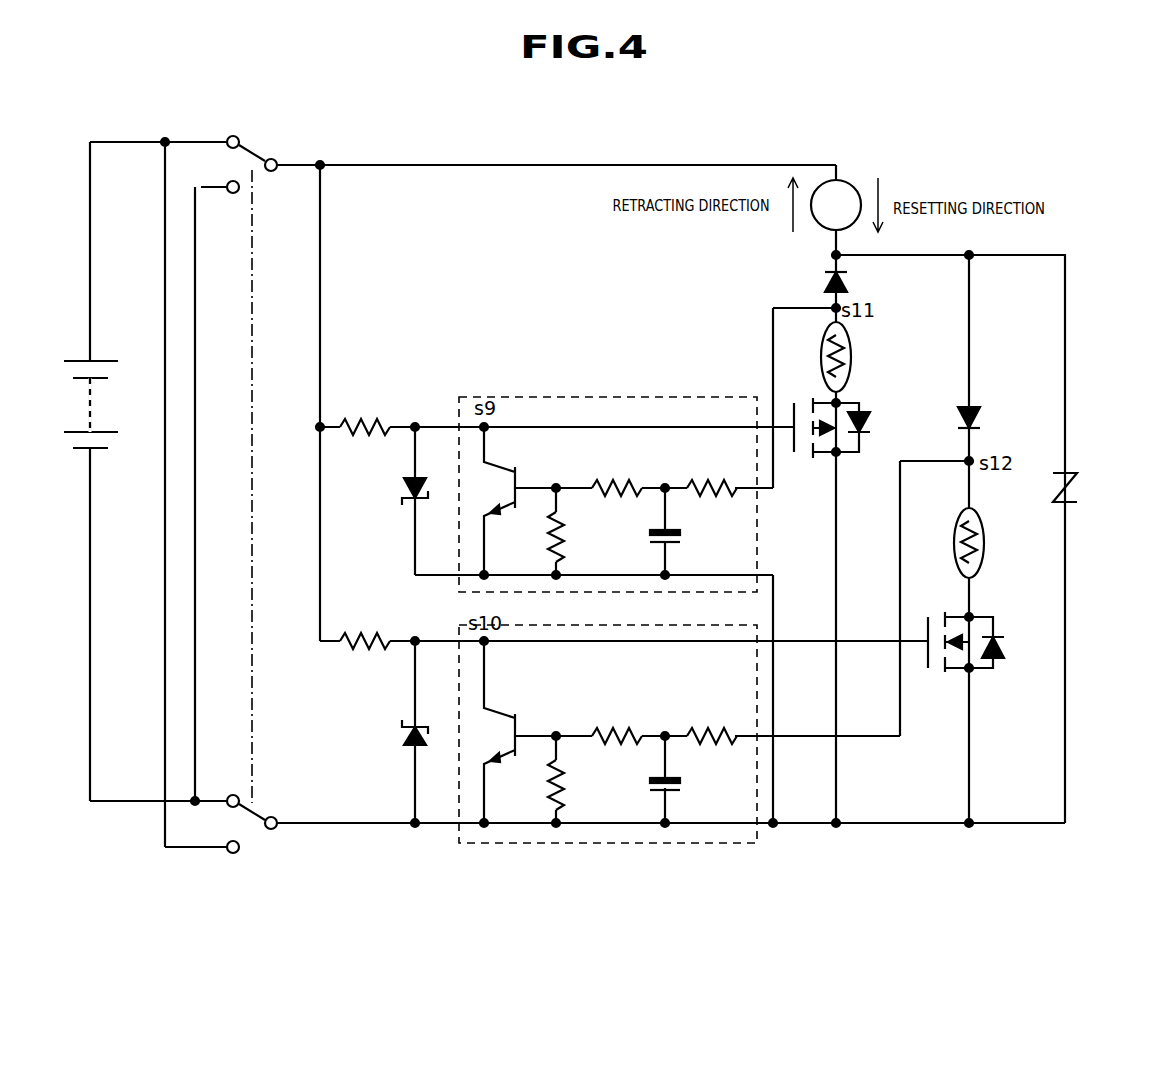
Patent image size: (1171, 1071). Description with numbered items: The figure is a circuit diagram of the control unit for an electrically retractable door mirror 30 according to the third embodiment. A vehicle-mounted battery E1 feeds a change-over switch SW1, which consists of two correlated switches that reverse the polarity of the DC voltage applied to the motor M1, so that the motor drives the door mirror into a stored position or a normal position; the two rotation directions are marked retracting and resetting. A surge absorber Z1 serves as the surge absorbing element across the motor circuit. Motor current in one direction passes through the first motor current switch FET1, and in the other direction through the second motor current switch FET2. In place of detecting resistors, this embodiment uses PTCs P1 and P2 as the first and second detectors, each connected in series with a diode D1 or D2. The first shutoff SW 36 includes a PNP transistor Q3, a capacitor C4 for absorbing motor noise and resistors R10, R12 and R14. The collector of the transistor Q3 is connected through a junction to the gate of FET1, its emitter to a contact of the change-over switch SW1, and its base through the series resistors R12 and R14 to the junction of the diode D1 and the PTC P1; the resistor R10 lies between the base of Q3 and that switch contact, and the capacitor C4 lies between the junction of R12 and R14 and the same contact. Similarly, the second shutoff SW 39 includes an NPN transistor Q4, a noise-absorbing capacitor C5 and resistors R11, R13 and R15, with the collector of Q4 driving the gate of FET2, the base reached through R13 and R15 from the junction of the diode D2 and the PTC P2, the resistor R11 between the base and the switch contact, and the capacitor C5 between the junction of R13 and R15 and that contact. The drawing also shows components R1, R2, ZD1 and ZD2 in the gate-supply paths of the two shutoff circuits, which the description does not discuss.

The control unit for an electrically retractable door mirror 30 is at (530, 156).
The first shutoff SW 36 is at (594, 462).
The second shutoff SW 39 is at (679, 769).
The battery E1 is at (84, 404).
The change-over switch SW1 is at (262, 150).
The motor M1 is at (845, 182).
The diode D1 is at (817, 281).
The diode D2 is at (984, 419).
The PTC P1 is at (849, 357).
The PTC P2 is at (983, 543).
The FET FET1 is at (855, 428).
The FET FET2 is at (989, 642).
The surge absorber Z1 is at (1080, 487).
The resistor R1 is at (365, 413).
The resistor R2 is at (365, 626).
The zener diode ZD1 is at (395, 501).
The zener diode ZD2 is at (395, 732).
The PNP transistor Q3 is at (511, 501).
The NPN transistor Q4 is at (511, 732).
The resistor R10 is at (577, 537).
The resistor R11 is at (577, 785).
The resistor R12 is at (617, 473).
The resistor R13 is at (617, 722).
The resistor R14 is at (712, 473).
The resistor R15 is at (712, 722).
The capacitor C4 is at (680, 546).
The capacitor C5 is at (680, 775).